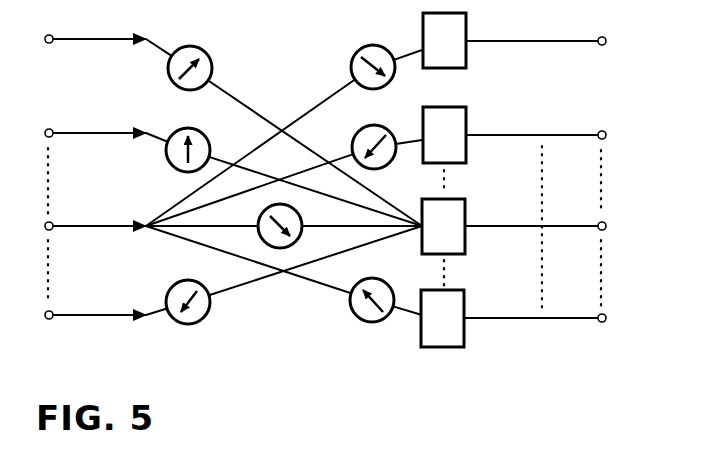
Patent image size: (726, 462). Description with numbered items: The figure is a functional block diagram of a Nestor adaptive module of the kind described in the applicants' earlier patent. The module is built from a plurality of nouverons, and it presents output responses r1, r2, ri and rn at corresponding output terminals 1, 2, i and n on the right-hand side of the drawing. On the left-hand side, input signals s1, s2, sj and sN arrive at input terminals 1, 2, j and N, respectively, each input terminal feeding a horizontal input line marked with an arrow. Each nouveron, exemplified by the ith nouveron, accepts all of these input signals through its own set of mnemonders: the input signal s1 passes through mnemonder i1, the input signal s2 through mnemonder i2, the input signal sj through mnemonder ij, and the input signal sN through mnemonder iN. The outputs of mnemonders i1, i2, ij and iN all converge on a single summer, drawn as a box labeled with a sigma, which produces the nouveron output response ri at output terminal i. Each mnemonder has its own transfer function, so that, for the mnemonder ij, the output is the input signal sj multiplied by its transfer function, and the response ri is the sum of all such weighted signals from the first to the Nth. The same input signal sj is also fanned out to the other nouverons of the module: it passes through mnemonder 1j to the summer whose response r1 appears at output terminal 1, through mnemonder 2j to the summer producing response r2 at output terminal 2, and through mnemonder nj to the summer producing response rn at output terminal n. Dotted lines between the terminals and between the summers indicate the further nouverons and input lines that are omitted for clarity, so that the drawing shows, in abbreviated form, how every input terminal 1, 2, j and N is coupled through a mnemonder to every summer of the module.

The input terminal / output terminal 1 is at (52, 43).
The input terminal / output terminal 2 is at (52, 137).
The input terminal j is at (52, 230).
The input terminal N is at (52, 319).
The input signal s1 is at (84, 41).
The input signal s2 is at (84, 135).
The input signal sj is at (84, 228).
The input signal sN is at (84, 317).
The mnemonder i1 is at (212, 61).
The mnemonder i2 is at (210, 143).
The mnemonder ij is at (297, 210).
The mnemonder iN is at (203, 319).
The mnemonder 1j is at (385, 86).
The mnemonder 2j is at (383, 166).
The mnemonder nj is at (363, 320).
The output response r1 is at (493, 42).
The output response r2 is at (493, 136).
The output response ri is at (493, 227).
The output response rn is at (491, 319).
The output terminal i is at (605, 229).
The output terminal n is at (605, 321).